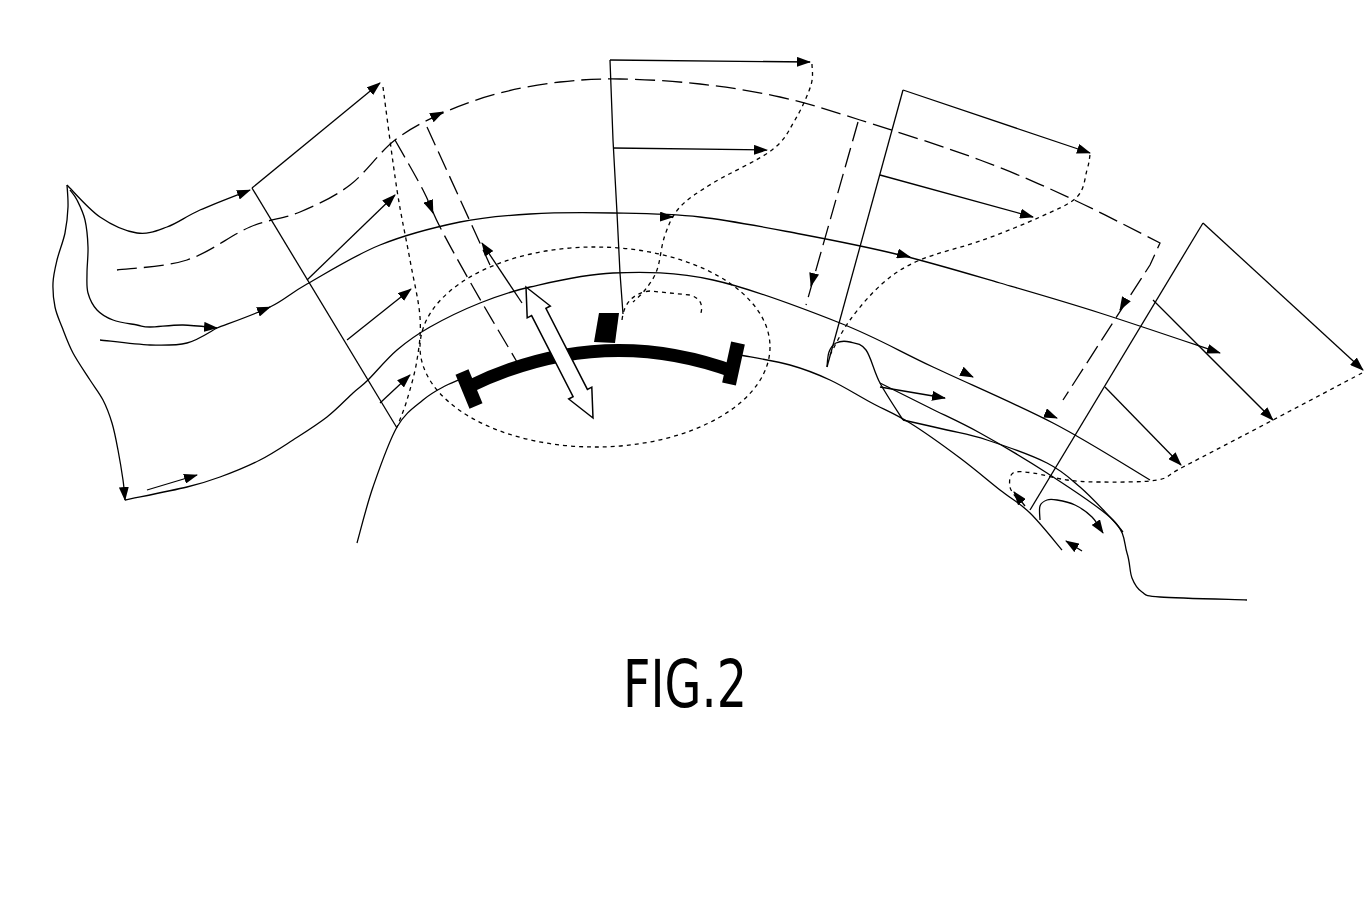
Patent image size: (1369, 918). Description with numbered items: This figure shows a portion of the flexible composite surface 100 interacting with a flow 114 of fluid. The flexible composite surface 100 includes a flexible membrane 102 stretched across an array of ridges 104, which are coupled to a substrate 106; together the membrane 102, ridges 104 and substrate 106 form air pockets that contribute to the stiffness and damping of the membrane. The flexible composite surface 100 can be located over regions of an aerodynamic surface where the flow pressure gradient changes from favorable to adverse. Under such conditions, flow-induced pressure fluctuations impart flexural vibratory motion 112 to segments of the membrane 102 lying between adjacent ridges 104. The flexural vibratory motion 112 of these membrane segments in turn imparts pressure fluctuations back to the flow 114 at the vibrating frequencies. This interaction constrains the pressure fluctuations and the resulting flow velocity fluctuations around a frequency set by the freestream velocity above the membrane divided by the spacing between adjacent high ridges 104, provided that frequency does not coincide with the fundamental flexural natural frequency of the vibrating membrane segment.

The flexible composite surface 100 is at (532, 440).
The flexible membrane 102 is at (370, 488).
The ridges 104 is at (750, 367).
The substrate 106 is at (663, 373).
The flexural vibratory motion 112 is at (680, 293).
The flow 114 is at (145, 324).